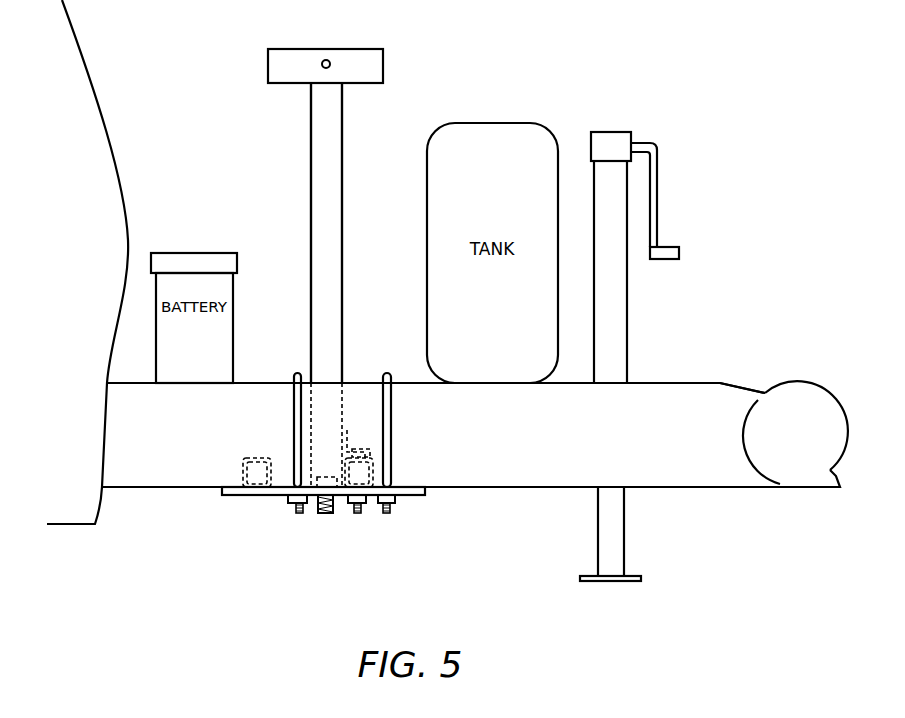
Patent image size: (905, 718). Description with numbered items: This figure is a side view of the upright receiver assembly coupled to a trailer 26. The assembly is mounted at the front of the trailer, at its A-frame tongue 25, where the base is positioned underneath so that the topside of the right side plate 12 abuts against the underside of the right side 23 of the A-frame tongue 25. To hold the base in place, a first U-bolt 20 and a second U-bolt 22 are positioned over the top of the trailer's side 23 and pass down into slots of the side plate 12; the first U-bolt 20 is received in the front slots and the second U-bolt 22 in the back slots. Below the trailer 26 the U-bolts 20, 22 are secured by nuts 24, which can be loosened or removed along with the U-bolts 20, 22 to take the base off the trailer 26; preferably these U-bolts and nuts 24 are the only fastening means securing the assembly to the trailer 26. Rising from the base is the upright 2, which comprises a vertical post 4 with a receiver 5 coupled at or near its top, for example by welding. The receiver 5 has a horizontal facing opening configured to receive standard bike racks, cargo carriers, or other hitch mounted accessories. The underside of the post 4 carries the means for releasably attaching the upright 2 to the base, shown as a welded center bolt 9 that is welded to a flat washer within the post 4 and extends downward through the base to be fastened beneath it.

The upright 2 is at (342, 193).
The vertical post 4 is at (326, 285).
The receiver 5 is at (360, 57).
The bolt 9 is at (324, 513).
The right side plate 12 is at (372, 496).
The first U-bolt 20 is at (392, 437).
The second U-bolt 22 is at (293, 435).
The right side of the A-frame tongue 23 is at (692, 473).
The nut 24 is at (303, 513).
The A-frame tongue 25 is at (683, 382).
The trailer 26 is at (731, 327).